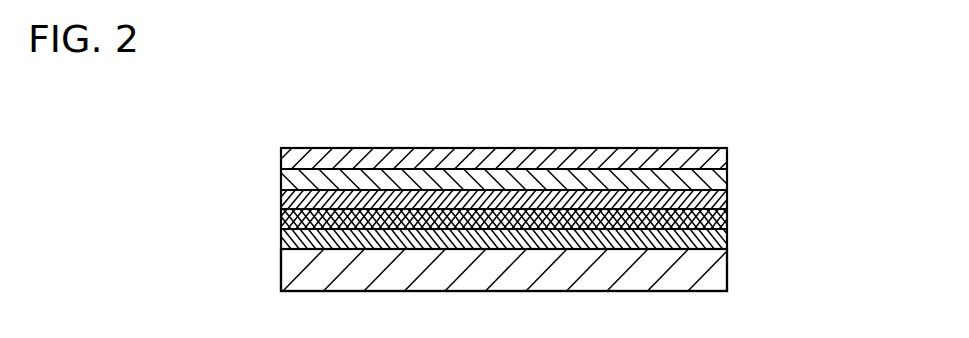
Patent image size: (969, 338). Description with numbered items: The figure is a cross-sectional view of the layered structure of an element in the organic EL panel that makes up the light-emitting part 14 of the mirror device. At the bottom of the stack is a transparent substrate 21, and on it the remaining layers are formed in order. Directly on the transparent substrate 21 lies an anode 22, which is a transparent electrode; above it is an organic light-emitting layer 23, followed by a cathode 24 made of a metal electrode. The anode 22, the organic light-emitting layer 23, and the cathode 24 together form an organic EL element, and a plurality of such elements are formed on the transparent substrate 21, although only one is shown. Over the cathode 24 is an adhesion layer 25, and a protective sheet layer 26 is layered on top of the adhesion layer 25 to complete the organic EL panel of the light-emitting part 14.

The light-emitting part 14 is at (578, 141).
The transparent substrate 21 is at (717, 280).
The anode 22 is at (727, 237).
The organic light-emitting layer 23 is at (727, 218).
The cathode 24 is at (727, 195).
The adhesion layer 25 is at (717, 177).
The protective sheet layer 26 is at (717, 159).